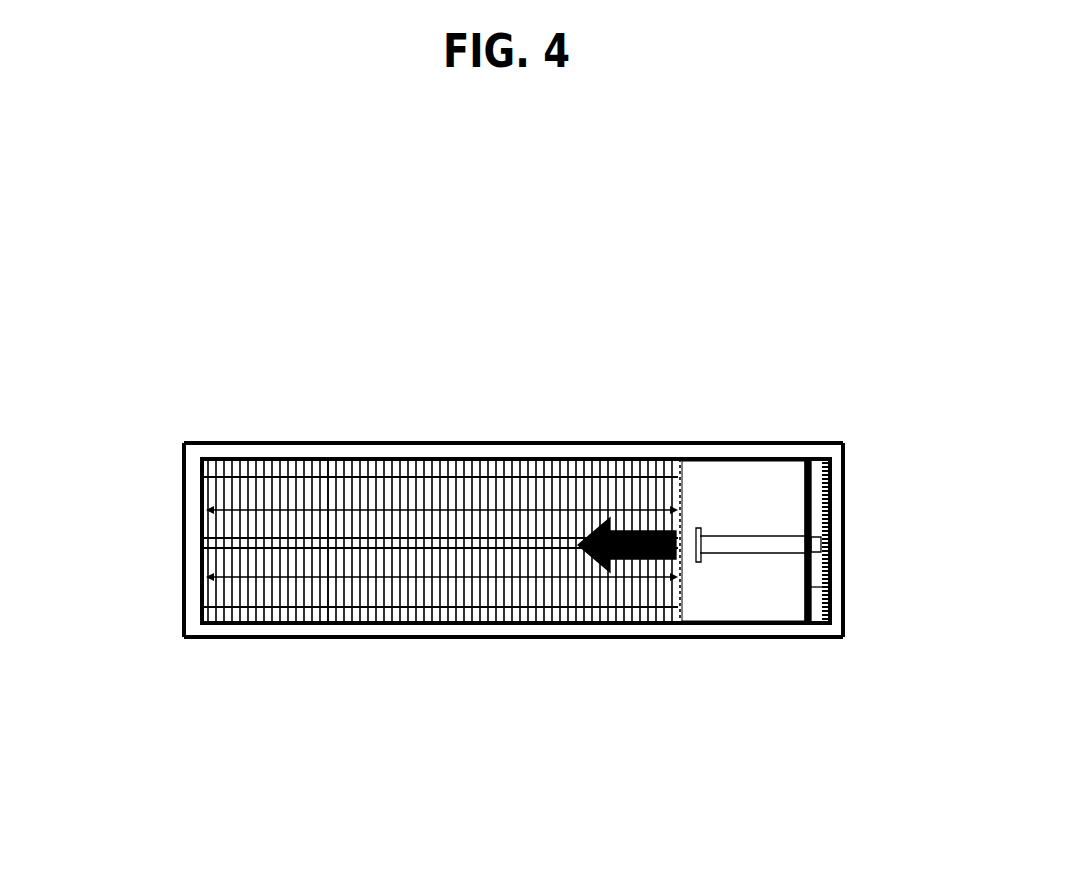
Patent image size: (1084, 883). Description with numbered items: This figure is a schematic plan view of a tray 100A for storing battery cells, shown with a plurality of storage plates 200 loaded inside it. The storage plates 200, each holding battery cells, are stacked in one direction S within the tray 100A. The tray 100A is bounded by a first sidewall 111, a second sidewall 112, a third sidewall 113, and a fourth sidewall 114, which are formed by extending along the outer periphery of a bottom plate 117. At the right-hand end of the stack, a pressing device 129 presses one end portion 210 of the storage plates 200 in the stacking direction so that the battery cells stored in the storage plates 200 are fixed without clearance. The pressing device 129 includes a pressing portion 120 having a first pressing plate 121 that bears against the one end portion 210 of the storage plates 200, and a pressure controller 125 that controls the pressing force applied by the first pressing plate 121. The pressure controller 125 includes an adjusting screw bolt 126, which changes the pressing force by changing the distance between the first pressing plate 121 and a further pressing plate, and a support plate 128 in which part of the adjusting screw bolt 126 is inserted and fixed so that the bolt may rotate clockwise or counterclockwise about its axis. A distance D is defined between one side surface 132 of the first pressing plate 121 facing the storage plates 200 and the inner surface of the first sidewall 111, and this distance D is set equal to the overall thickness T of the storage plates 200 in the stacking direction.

The tray for storing battery cells 100A is at (262, 303).
The first sidewall 111 is at (182, 545).
The second sidewall 112 is at (468, 443).
The third sidewall 113 is at (845, 532).
The fourth sidewall 114 is at (497, 639).
The bottom plate 117 is at (753, 470).
The pressing portion 120 is at (783, 512).
The first pressing plate 121 is at (690, 447).
The pressure controller 125 is at (763, 543).
The adjusting screw bolt 126 is at (812, 549).
The support plate 128 is at (830, 587).
The pressing device 129 is at (832, 493).
The one side surface of the first pressing plate 132 is at (672, 485).
The storage plates 200 is at (204, 597).
The one end portion of the storage plates 210 is at (680, 600).
The distance D is at (313, 455).
The overall thickness of the storage plates T is at (326, 575).
The stacking direction S is at (630, 624).